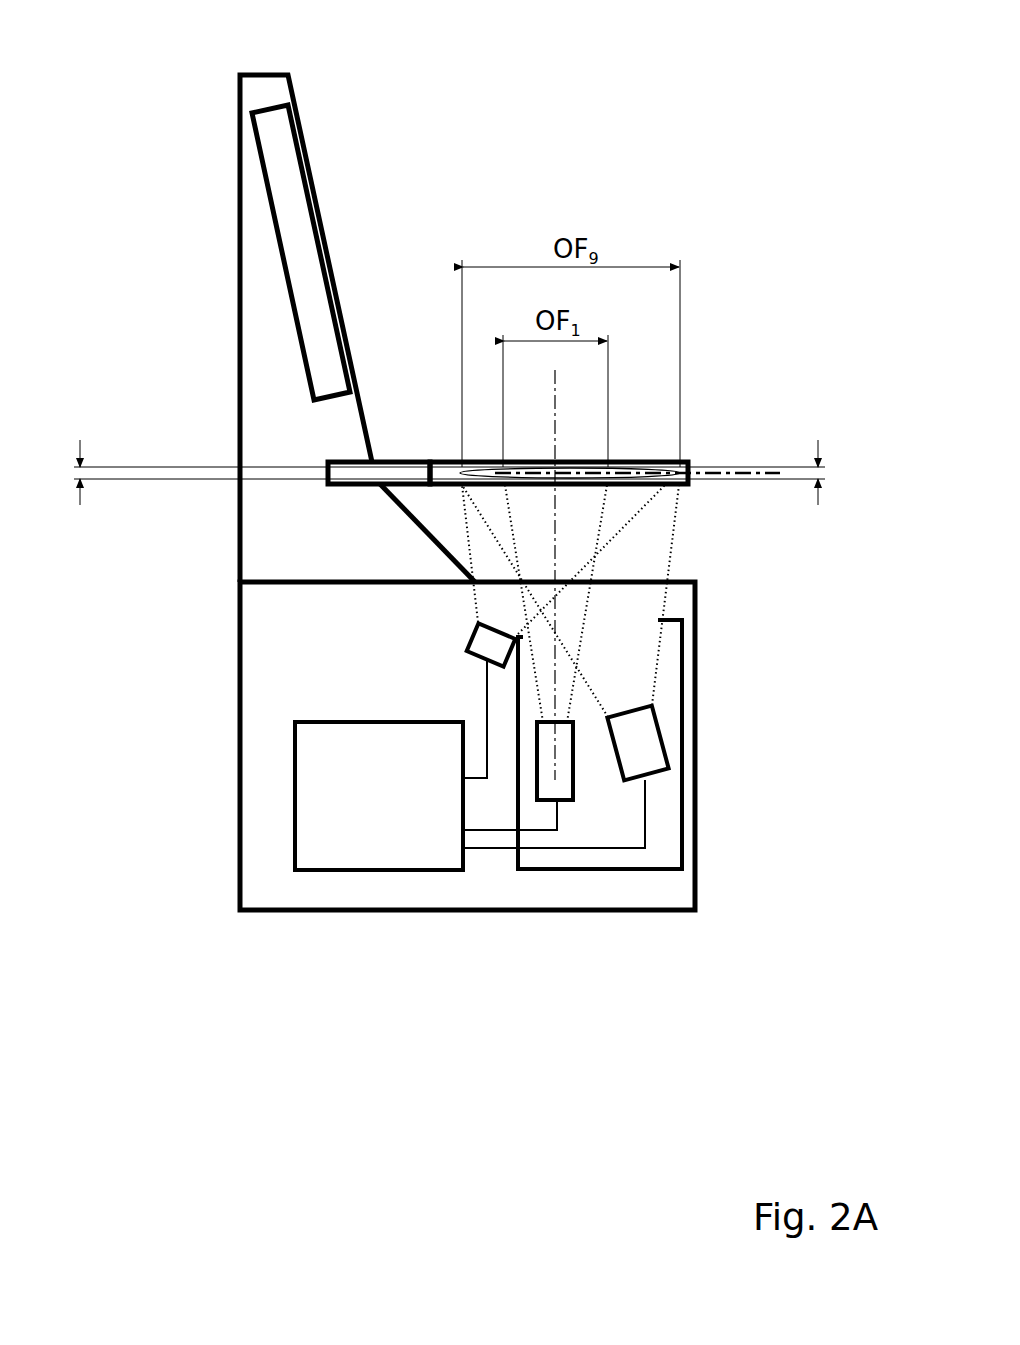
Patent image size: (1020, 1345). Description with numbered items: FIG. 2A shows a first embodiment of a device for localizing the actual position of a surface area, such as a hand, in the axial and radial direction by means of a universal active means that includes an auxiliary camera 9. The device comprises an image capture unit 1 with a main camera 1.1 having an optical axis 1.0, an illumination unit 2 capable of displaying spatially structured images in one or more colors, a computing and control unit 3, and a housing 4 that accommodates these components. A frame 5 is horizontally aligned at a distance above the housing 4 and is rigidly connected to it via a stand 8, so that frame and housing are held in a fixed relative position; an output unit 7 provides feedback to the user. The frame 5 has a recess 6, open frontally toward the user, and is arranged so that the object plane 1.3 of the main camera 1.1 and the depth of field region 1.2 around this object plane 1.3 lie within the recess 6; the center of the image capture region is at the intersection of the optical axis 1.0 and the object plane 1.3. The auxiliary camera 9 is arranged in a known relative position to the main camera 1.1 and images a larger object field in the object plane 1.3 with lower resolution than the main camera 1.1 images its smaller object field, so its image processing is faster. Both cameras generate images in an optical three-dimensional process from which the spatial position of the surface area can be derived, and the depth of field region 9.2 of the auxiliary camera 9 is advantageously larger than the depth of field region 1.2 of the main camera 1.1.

The image capture unit 1 is at (683, 808).
The optical axis 1.0 is at (557, 425).
The main camera 1.1 is at (563, 787).
The depth of field region 1.2 is at (822, 491).
The object plane 1.3 is at (725, 473).
The illumination unit 2 is at (657, 770).
The computing and control unit 3 is at (387, 845).
The housing 4 is at (240, 770).
The frame 5 is at (398, 472).
The recess 6 is at (448, 473).
The output unit 7 is at (293, 178).
The stand 8 is at (263, 278).
The auxiliary camera 9 is at (475, 648).
The depth of field region 9.2 is at (86, 489).